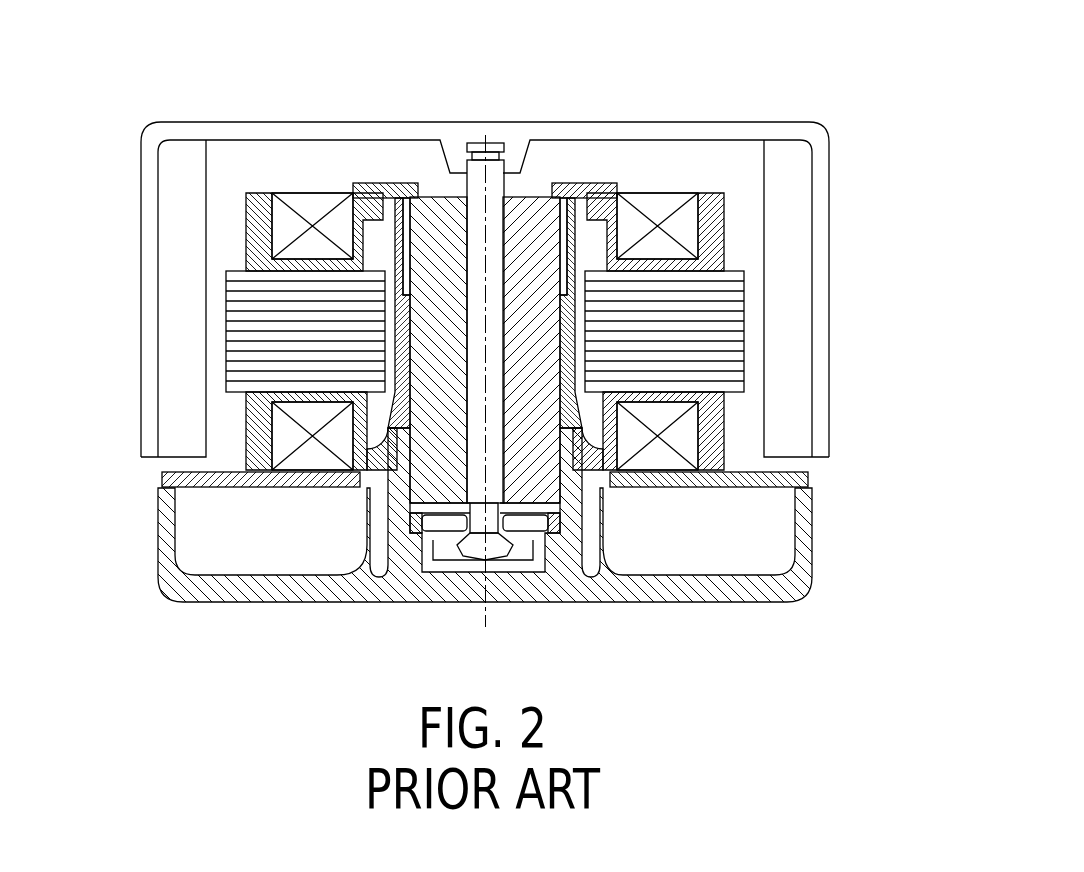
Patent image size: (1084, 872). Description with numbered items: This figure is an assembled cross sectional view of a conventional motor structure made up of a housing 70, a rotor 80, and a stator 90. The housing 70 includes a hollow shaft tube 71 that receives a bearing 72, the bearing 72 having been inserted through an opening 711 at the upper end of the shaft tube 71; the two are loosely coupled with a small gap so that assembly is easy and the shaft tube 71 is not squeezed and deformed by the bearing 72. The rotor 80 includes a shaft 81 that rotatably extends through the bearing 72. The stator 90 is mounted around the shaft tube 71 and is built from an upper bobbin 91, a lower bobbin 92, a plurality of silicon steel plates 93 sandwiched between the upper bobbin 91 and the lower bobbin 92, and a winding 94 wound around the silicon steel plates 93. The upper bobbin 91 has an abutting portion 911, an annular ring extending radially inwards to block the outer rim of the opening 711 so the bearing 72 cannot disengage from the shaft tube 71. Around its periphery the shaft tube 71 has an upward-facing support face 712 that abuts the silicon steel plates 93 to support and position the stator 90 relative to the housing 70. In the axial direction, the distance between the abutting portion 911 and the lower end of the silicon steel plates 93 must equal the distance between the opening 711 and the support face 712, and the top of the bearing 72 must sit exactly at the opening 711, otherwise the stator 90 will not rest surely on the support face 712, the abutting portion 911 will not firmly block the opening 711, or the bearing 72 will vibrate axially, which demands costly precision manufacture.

The housing 70 is at (683, 642).
The shaft tube 71 is at (400, 322).
The opening 711 is at (410, 198).
The support face 712 is at (372, 390).
The bearing 72 is at (428, 245).
The rotor 80 is at (593, 84).
The shaft 81 is at (473, 188).
The stator 90 is at (566, 295).
The upper bobbin 91 is at (713, 225).
The abutting portion 911 is at (562, 190).
The lower bobbin 92 is at (717, 448).
The silicon steel plates 93 is at (738, 328).
The winding 94 is at (650, 200).